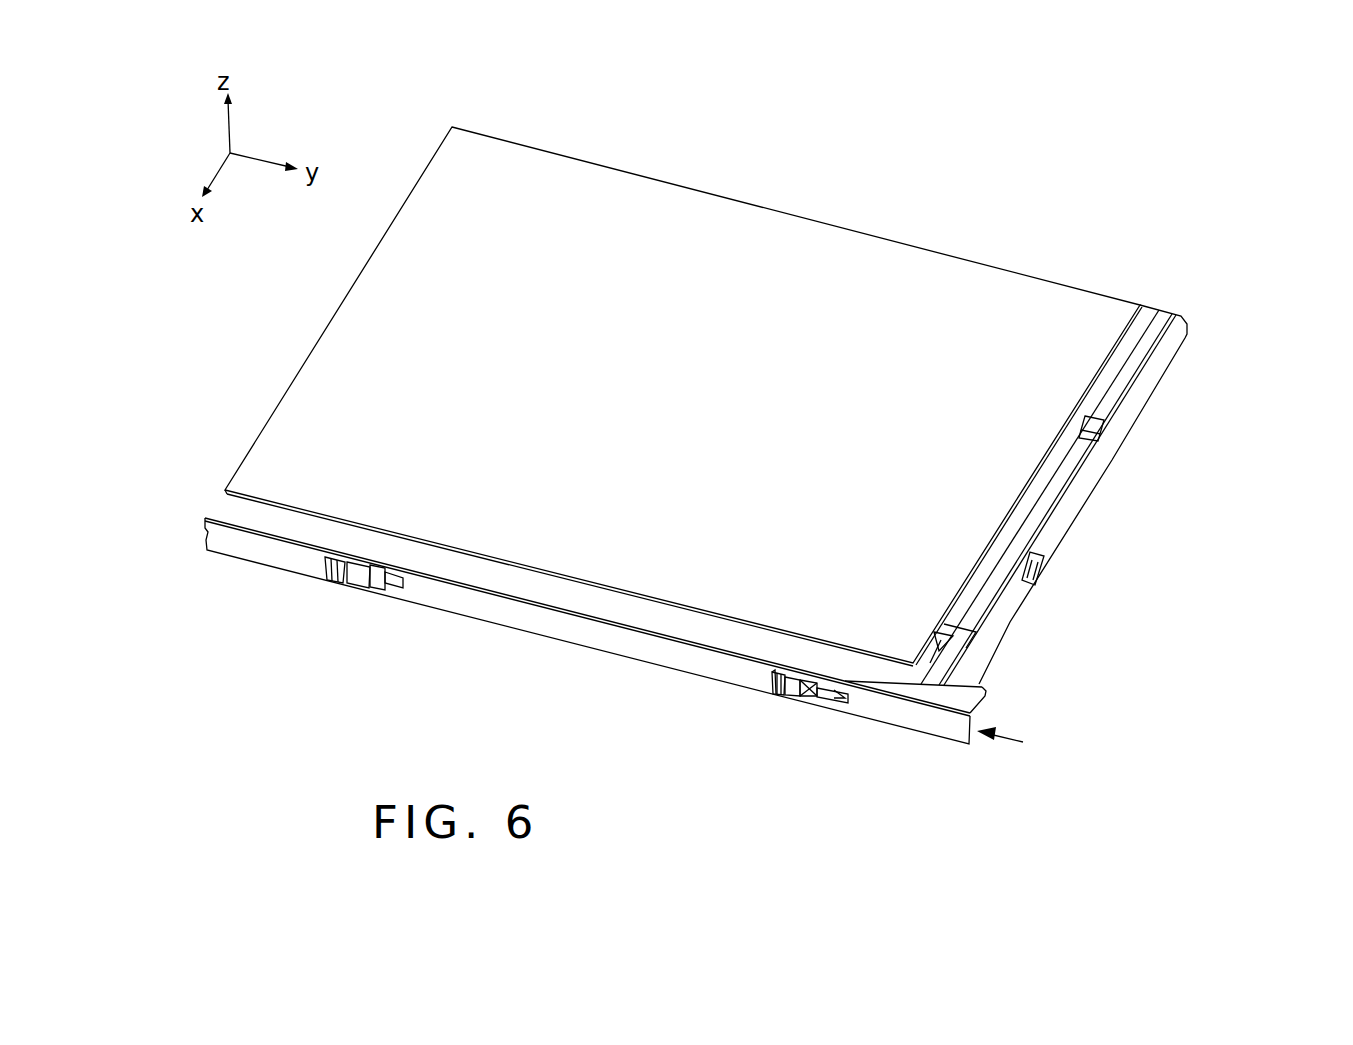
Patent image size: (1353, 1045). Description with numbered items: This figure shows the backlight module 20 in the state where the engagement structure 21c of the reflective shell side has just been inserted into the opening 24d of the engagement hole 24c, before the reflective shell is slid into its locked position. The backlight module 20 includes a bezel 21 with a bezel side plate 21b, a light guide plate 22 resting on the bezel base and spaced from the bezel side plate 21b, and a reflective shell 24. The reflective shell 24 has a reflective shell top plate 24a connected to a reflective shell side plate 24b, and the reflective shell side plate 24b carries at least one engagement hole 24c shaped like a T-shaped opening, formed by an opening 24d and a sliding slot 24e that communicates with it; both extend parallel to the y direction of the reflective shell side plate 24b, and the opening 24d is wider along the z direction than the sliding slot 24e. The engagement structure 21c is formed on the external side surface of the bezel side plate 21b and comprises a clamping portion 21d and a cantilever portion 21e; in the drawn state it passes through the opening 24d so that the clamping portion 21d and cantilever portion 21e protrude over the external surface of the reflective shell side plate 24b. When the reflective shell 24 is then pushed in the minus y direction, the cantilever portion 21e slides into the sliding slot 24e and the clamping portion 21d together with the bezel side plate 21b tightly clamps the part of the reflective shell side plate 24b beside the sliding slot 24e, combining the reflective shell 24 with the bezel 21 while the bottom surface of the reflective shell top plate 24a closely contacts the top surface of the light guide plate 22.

The backlight module 20 is at (1216, 148).
The bezel 21 is at (1148, 403).
The bezel side plate 21b is at (1053, 530).
The engagement structure 21c is at (788, 698).
The clamping portion 21d is at (778, 696).
The cantilever portion 21e is at (806, 698).
The light guide plate 22 is at (893, 297).
The reflective shell 24 is at (969, 745).
The reflective shell top plate 24a is at (958, 698).
The reflective shell side plate 24b is at (928, 722).
The engagement hole 24c is at (789, 670).
The opening 24d is at (814, 701).
The sliding slot 24e is at (836, 706).